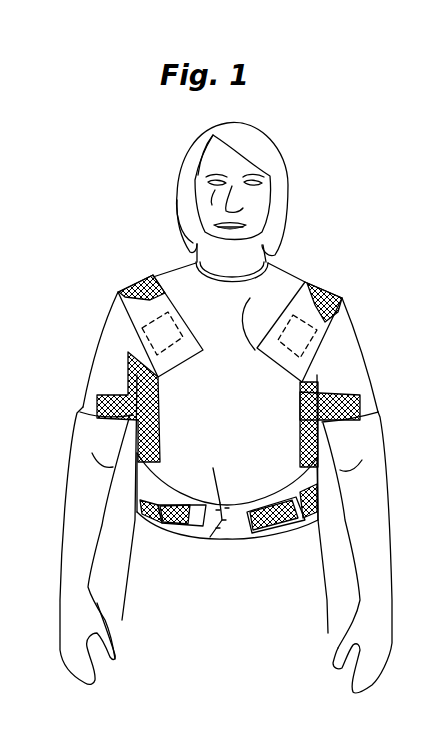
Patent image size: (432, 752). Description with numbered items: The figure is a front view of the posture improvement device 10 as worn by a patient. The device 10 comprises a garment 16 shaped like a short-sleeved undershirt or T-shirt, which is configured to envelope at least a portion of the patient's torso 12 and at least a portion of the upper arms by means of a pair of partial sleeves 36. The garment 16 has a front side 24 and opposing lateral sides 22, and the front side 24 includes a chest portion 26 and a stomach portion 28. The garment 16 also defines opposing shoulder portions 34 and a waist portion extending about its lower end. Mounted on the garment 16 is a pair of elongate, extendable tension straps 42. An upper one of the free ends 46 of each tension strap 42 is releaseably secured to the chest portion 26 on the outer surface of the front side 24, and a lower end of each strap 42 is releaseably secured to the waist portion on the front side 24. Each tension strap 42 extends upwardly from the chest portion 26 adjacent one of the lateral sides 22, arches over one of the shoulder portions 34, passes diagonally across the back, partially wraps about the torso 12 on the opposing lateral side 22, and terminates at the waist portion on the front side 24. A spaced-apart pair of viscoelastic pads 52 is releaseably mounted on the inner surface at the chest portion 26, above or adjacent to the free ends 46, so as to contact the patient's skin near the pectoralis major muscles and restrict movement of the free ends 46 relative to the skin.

The posture improvement device 10 is at (117, 214).
The patient's torso 12 is at (280, 534).
The garment 16 is at (353, 320).
The lateral sides 22 is at (130, 425).
The front side 24 is at (210, 537).
The chest portion 26 is at (250, 298).
The stomach portion 28 is at (230, 498).
The shoulder portions 34 is at (175, 267).
The partial sleeves 36 is at (83, 378).
The tension straps 42 is at (128, 285).
The free ends 46 is at (170, 528).
The viscoelastic pads 52 is at (145, 333).